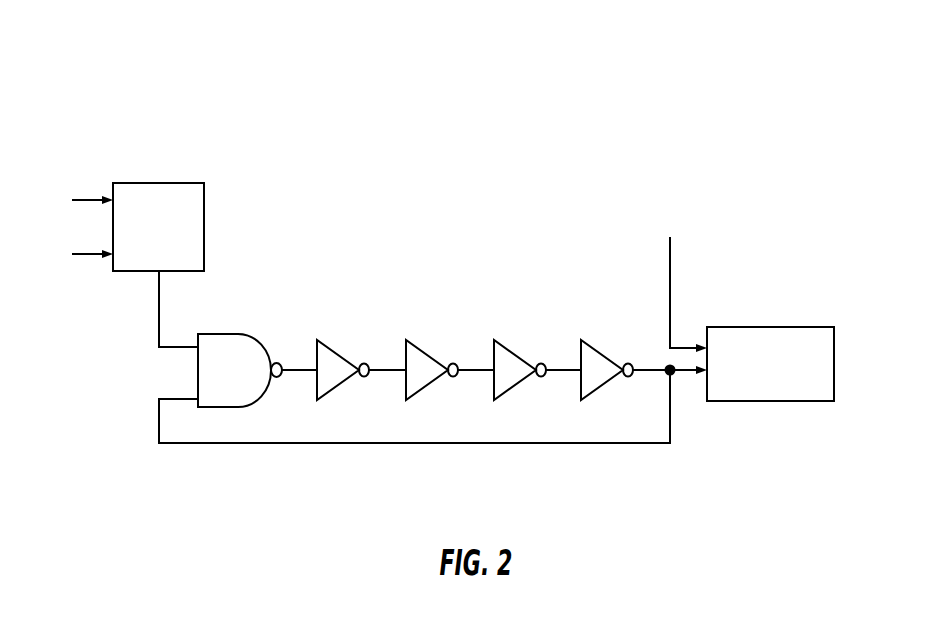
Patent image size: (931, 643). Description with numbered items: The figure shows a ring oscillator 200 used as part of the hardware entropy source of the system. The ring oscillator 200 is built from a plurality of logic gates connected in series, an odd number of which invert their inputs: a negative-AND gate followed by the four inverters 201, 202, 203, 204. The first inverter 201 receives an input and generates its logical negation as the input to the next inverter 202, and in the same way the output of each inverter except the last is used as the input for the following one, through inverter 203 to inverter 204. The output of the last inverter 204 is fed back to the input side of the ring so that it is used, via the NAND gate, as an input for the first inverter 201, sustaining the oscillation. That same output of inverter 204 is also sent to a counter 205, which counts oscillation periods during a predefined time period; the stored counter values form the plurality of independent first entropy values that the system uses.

The ring oscillator 200 is at (313, 69).
The inverter 201 is at (333, 332).
The inverter 202 is at (420, 332).
The inverter 203 is at (509, 332).
The inverter 204 is at (593, 332).
The counter 205 is at (794, 438).